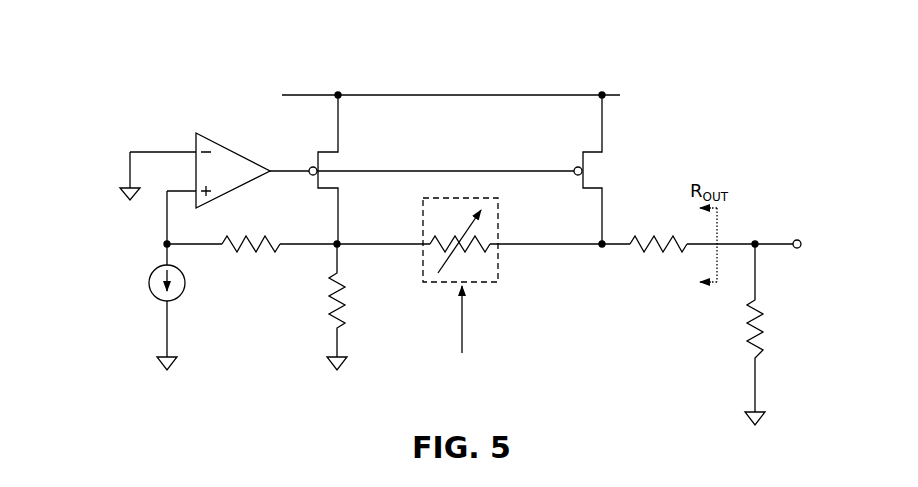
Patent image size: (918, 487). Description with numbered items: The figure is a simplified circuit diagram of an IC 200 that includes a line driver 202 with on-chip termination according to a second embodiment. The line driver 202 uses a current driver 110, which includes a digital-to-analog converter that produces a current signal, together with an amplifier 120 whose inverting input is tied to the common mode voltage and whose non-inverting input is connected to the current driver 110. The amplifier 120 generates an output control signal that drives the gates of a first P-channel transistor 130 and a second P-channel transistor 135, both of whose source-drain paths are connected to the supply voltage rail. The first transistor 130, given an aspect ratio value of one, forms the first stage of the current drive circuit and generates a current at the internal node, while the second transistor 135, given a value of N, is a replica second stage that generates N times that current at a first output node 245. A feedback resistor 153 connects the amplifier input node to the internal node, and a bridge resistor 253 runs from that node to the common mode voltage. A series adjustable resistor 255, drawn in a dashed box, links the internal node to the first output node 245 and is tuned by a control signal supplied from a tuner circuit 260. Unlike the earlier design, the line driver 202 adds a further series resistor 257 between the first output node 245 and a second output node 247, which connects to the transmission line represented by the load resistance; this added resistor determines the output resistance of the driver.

The IC 200 is at (131, 73).
The amplifier 120 is at (207, 113).
The first P-channel transistor 130 is at (303, 146).
The second P-channel transistor 135 is at (624, 151).
The line driver 202 is at (521, 78).
The current driver 110 is at (194, 298).
The feedback resistor 153 is at (259, 221).
The bridge resistor 253 is at (348, 336).
The series (adjustable) resistor 255 is at (491, 286).
The tuner circuit 260 is at (493, 333).
The first output node 245 is at (599, 241).
The series resistor 257 is at (658, 226).
The second output node 247 is at (757, 243).